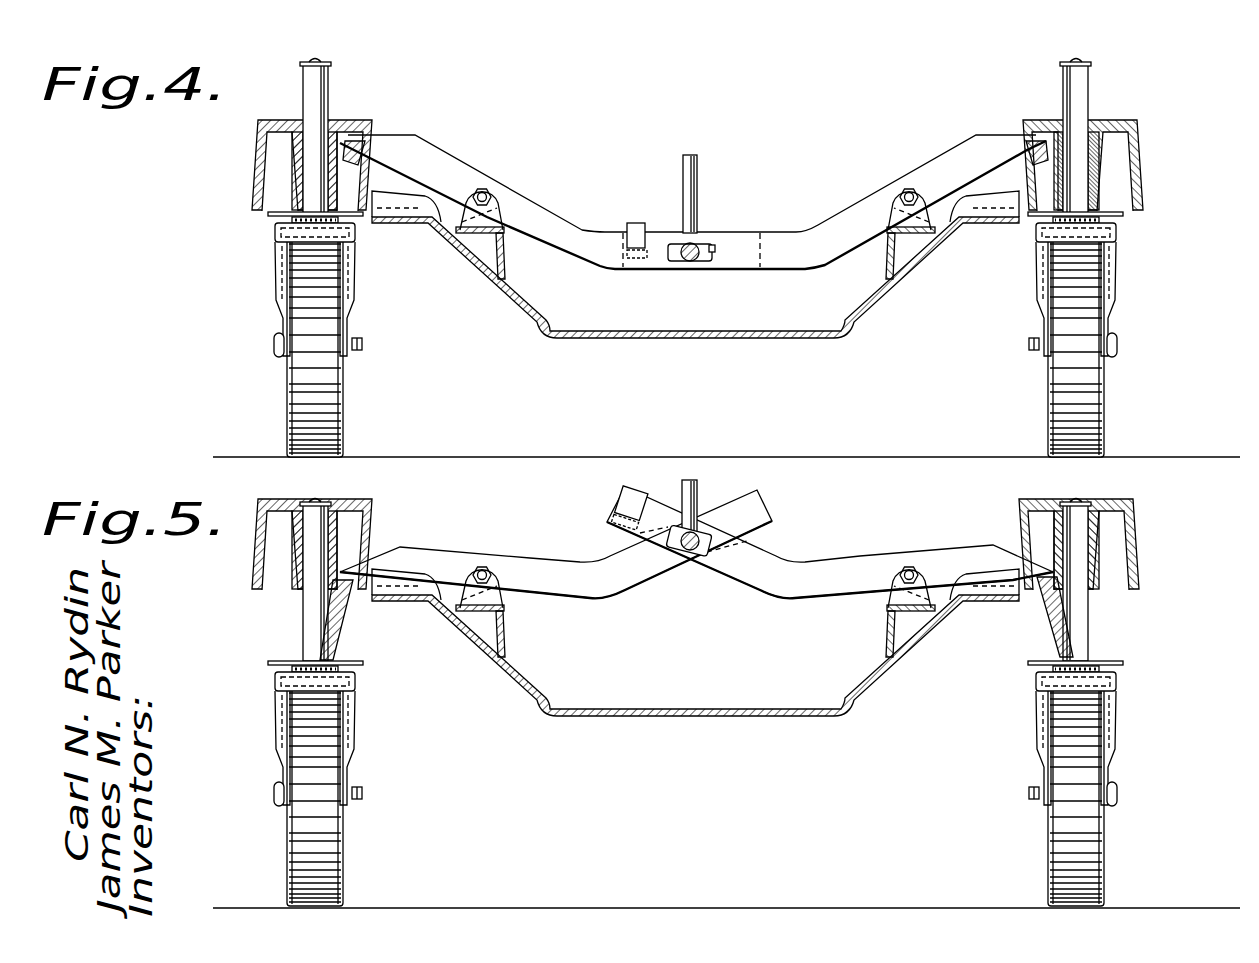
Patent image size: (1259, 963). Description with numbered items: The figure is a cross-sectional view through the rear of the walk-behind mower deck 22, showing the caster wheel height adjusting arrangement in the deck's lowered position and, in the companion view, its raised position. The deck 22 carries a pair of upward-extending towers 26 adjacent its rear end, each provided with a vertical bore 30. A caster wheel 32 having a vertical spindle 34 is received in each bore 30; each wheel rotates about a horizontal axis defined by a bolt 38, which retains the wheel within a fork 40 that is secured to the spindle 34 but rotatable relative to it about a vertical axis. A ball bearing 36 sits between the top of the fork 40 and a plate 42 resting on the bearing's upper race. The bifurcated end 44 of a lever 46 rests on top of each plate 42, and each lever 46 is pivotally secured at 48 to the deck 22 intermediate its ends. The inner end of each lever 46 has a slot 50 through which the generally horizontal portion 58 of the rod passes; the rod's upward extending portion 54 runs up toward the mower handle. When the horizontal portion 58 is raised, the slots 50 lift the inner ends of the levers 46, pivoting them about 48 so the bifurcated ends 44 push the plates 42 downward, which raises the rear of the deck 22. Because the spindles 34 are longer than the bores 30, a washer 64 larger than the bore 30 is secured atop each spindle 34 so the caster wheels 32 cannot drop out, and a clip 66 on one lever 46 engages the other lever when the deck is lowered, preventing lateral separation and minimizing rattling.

In FIG. 4, the deck 22 is at (545, 327).
In FIG. 5, the deck 22 is at (858, 700).
In FIG. 4, the tower 26 is at (265, 132).
In FIG. 5, the tower 26 is at (372, 520).
In FIG. 4, the bore 30 is at (313, 148).
In FIG. 5, the bore 30 is at (695, 550).
In FIG. 4, the caster wheel 32 is at (699, 323).
In FIG. 5, the caster wheel 32 is at (714, 762).
In FIG. 4, the spindle 34 is at (329, 100).
In FIG. 5, the spindle 34 is at (303, 607).
In FIG. 4, the ball bearing 36 is at (292, 219).
In FIG. 5, the ball bearing 36 is at (290, 668).
In FIG. 4, the bolt 38 is at (278, 345).
In FIG. 5, the bolt 38 is at (275, 797).
In FIG. 4, the fork 40 is at (358, 243).
In FIG. 5, the fork 40 is at (358, 692).
In FIG. 4, the plate 42 is at (268, 213).
In FIG. 5, the plate 42 is at (350, 662).
In FIG. 4, the bifurcated end 44 is at (1040, 183).
In FIG. 5, the bifurcated end 44 is at (335, 615).
In FIG. 4, the lever 46 is at (543, 178).
In FIG. 5, the lever 46 is at (530, 560).
In FIG. 4, the pivot 48 is at (483, 186).
In FIG. 5, the pivot 48 is at (480, 562).
In FIG. 4, the slot 50 is at (703, 247).
In FIG. 5, the slot 50 is at (676, 552).
In FIG. 4, the upward extending portion 54 is at (698, 175).
In FIG. 5, the upward extending portion 54 is at (697, 492).
In FIG. 4, the horizontal portion 58 is at (688, 262).
In FIG. 5, the horizontal portion 58 is at (693, 553).
In FIG. 4, the washer 64 is at (323, 62).
In FIG. 5, the washer 64 is at (322, 500).
In FIG. 4, the clip 66 is at (640, 223).
In FIG. 5, the clip 66 is at (632, 490).